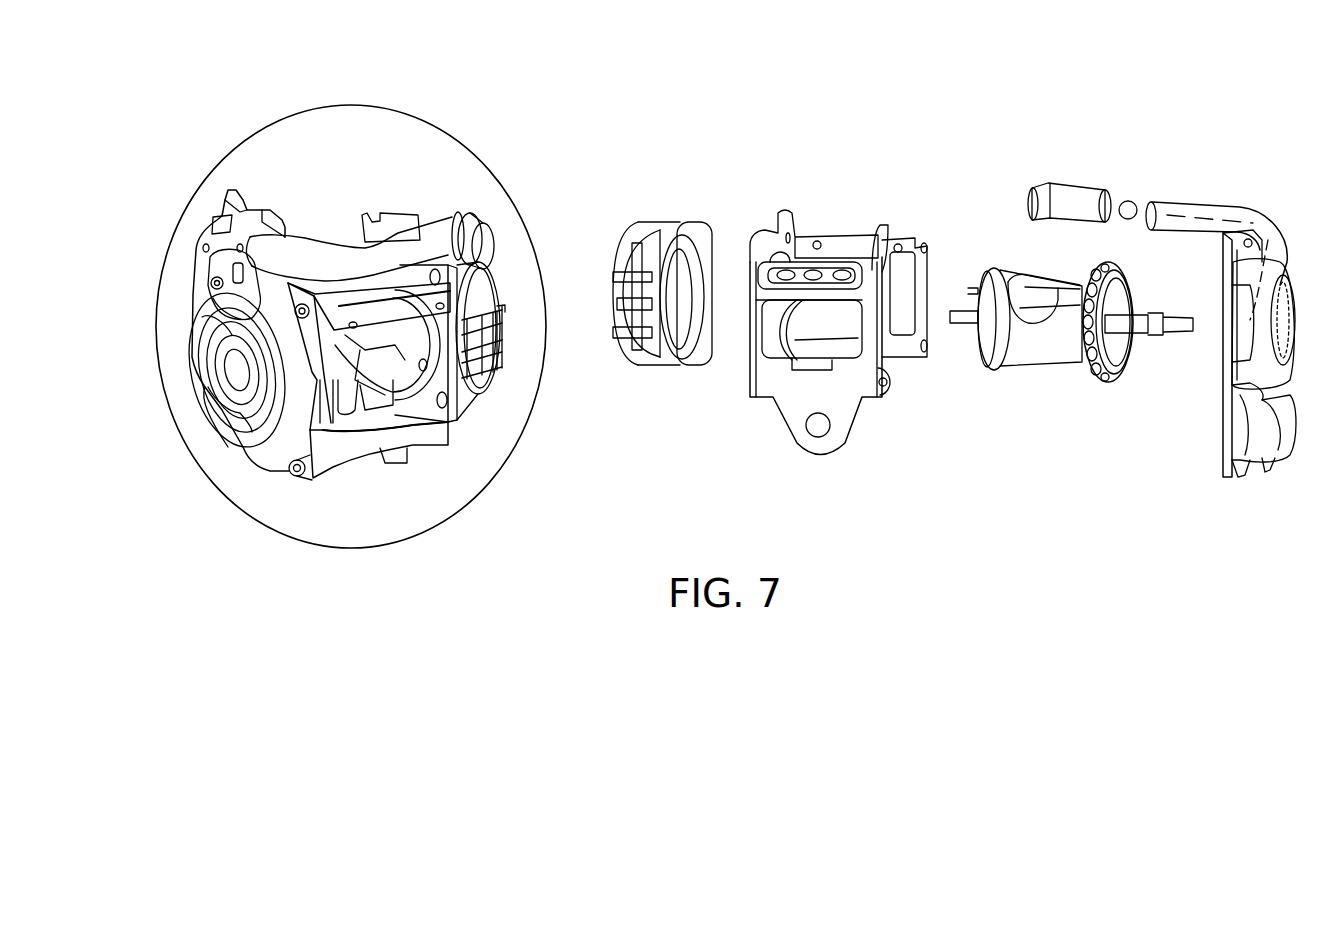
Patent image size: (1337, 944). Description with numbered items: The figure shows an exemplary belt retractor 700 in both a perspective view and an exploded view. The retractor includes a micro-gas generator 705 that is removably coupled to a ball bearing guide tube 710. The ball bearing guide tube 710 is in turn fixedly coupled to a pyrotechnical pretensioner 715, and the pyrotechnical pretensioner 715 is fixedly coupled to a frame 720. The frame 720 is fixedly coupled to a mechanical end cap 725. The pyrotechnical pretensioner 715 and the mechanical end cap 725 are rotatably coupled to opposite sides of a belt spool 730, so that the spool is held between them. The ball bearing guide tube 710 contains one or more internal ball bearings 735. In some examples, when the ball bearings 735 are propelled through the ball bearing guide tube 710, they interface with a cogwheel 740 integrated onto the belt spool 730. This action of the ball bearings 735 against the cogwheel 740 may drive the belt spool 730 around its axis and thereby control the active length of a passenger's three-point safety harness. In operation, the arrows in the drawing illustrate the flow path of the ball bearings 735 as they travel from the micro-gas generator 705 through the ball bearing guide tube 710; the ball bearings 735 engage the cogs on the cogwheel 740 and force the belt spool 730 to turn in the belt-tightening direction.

The belt retractor 700 is at (820, 100).
The micro-gas generator 705 is at (1082, 188).
The ball bearing guide tube 710 is at (1203, 202).
The pyrotechnical pretensioner 715 is at (1235, 440).
The frame 720 is at (765, 232).
The mechanical end cap 725 is at (645, 215).
The belt spool 730 is at (1045, 362).
The ball bearings 735 is at (1130, 201).
The cogwheel 740 is at (1097, 275).